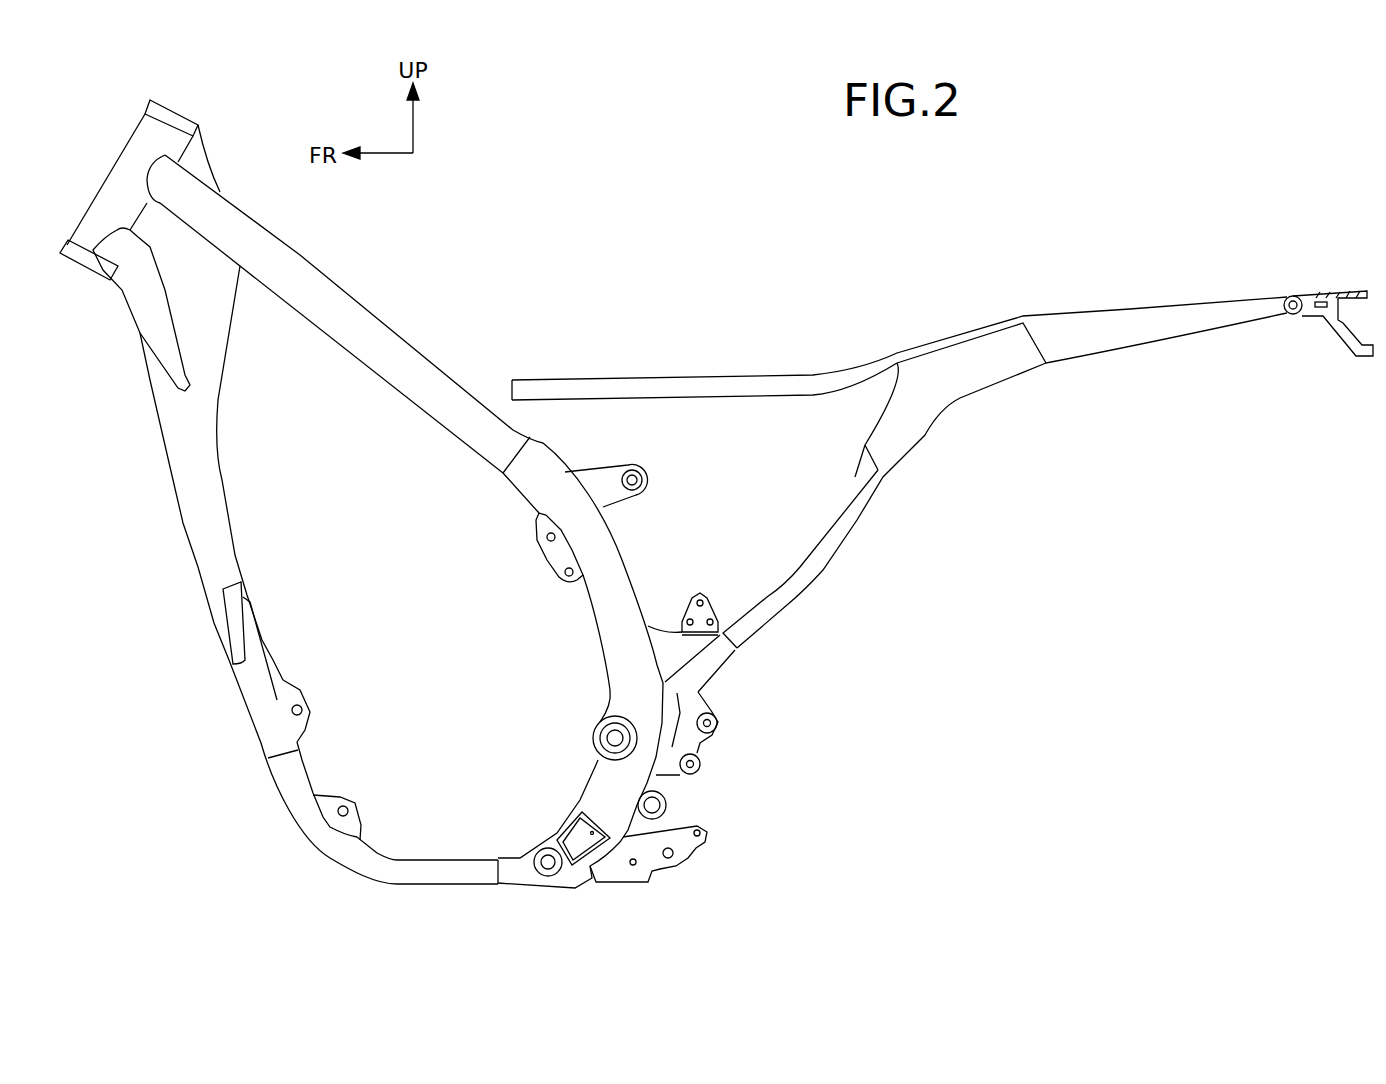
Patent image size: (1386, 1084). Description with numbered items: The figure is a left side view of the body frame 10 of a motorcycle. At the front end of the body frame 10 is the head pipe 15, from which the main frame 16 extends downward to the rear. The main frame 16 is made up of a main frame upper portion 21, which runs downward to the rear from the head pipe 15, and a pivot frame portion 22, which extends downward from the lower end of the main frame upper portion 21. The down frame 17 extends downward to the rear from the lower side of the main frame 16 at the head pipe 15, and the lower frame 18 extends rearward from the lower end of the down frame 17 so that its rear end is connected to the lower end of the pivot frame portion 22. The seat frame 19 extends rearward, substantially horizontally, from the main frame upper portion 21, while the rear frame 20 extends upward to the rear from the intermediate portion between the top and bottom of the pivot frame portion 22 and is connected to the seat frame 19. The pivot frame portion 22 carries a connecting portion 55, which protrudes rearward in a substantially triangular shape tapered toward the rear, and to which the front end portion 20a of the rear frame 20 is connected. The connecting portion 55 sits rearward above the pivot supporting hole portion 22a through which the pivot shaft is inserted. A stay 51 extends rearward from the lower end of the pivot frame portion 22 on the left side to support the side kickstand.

The body frame 10 is at (506, 150).
The head pipe 15 is at (123, 173).
The main frame 16 is at (530, 262).
The down frame 17 is at (170, 468).
The lower frame 18 is at (347, 867).
The seat frame 19 is at (767, 383).
The rear frame 20 is at (817, 583).
The front end portion 20a is at (742, 638).
The main frame upper portion 21 is at (448, 387).
The pivot frame portion 22 is at (565, 495).
The pivot supporting hole portion 22a is at (593, 740).
The stay 51 is at (653, 853).
The connecting portion 55 is at (685, 650).